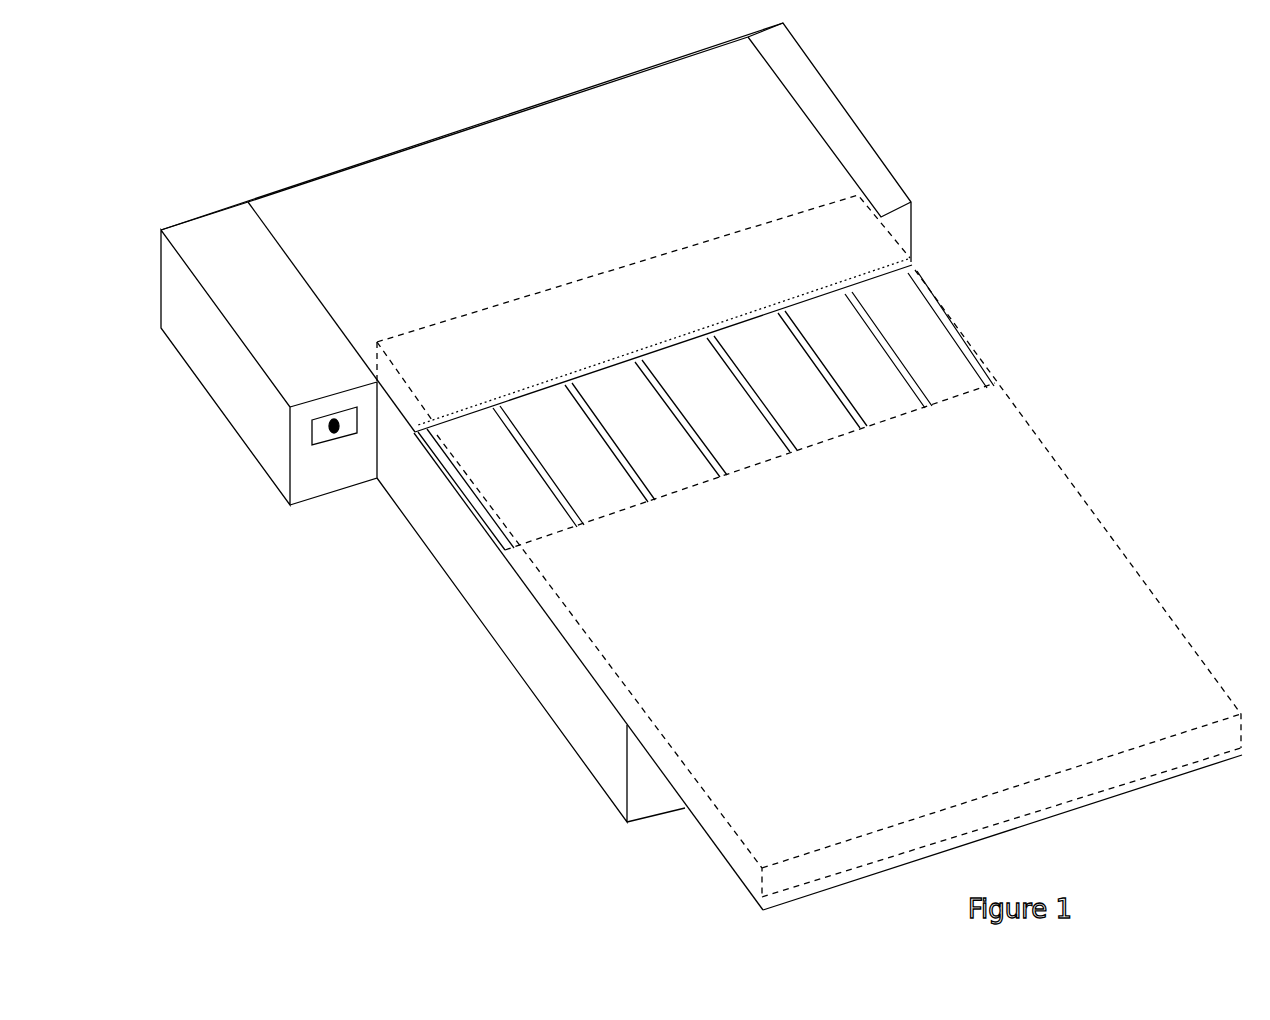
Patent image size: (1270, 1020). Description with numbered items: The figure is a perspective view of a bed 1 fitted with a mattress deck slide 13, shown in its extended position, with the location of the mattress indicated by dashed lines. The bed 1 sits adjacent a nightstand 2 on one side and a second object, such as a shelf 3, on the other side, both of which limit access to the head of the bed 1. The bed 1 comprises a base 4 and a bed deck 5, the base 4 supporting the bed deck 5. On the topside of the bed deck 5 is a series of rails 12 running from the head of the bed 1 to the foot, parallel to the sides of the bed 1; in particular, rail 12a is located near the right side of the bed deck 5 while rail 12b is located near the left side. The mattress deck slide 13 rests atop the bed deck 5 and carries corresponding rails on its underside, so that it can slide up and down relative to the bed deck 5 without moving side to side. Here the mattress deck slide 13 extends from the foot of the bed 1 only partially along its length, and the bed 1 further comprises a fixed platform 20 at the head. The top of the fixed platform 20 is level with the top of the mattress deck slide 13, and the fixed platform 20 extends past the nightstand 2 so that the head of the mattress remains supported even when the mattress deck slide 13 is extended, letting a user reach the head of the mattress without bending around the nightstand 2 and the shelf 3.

The bed 1 is at (440, 700).
The nightstand 2 is at (258, 405).
The shelf 3 is at (854, 153).
The base 4 is at (572, 668).
The bed deck 5 is at (522, 505).
The rails 12 is at (643, 480).
The rail 12a is at (947, 325).
The rail 12b is at (456, 472).
The mattress deck slide 13 is at (697, 650).
The fixed platform 20 is at (474, 223).